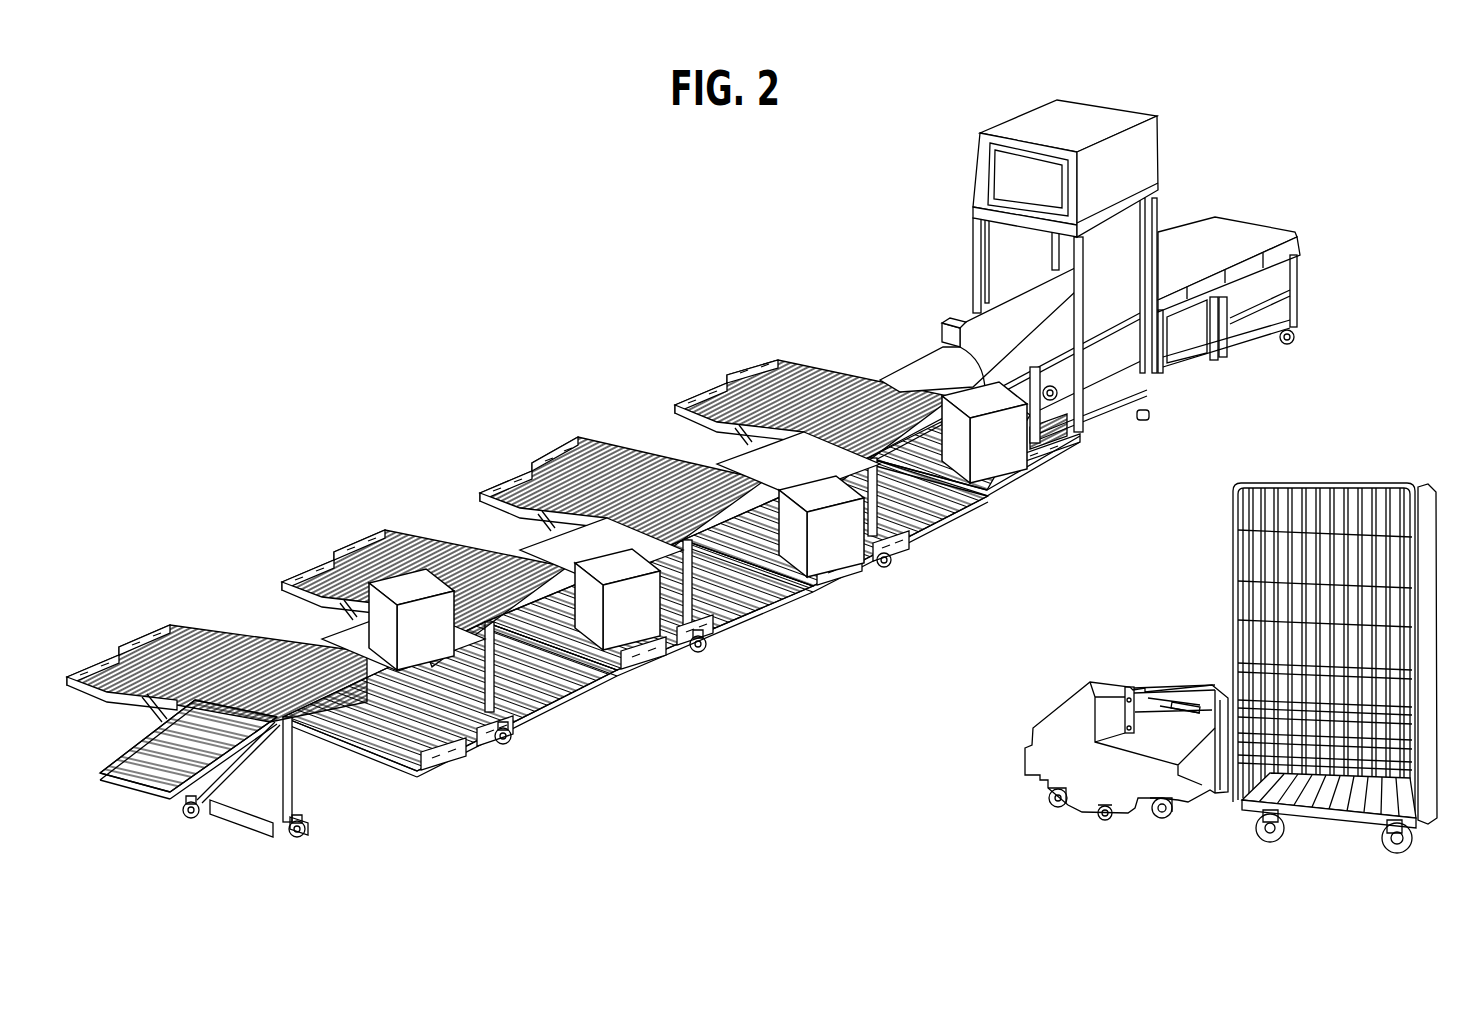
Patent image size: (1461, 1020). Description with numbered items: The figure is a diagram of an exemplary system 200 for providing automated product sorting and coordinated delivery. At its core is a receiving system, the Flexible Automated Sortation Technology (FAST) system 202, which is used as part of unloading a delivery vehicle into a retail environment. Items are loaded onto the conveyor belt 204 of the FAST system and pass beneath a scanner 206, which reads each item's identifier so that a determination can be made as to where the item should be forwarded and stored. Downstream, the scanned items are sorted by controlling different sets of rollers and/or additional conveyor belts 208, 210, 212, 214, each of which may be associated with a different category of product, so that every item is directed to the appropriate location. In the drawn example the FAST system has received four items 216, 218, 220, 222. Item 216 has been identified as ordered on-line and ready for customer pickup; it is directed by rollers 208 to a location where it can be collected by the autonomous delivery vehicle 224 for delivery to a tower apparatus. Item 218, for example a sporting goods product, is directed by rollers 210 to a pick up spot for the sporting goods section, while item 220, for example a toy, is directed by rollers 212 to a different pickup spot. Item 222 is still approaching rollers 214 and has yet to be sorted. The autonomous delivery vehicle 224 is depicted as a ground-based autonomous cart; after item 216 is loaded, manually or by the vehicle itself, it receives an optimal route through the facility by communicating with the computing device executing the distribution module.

The system 200 is at (616, 280).
The Flexible Automated Sortation Technology (FAST) system 202 is at (905, 350).
The conveyor belt 204 is at (1189, 247).
The scanner 206 is at (1023, 173).
The rollers 208 is at (847, 422).
The rollers 210 is at (683, 500).
The rollers 212 is at (450, 550).
The rollers 214 is at (254, 695).
The item 216 is at (985, 392).
The item 218 is at (813, 500).
The item 220 is at (478, 552).
The item 222 is at (380, 620).
The autonomous delivery vehicle 224 is at (1273, 540).